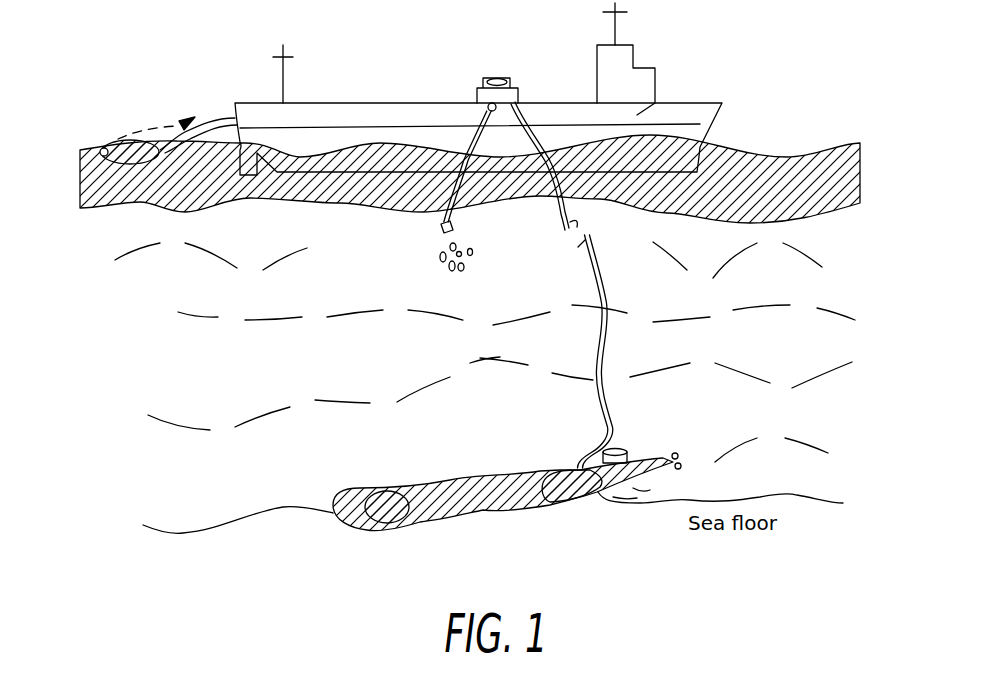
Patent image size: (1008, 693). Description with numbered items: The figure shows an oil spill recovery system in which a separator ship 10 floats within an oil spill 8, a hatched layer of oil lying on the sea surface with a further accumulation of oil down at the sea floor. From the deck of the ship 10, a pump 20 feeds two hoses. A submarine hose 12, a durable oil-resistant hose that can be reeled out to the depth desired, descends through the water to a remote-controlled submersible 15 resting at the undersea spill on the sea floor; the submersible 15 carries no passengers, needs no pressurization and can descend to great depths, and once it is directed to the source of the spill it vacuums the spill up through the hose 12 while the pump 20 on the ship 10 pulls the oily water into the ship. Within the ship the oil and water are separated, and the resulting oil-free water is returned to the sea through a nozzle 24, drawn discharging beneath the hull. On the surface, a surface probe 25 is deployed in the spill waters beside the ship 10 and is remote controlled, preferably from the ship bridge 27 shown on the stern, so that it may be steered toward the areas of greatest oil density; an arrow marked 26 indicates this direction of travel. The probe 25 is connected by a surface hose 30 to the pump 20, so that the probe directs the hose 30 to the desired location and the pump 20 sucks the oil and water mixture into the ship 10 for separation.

The oil spill 8 is at (762, 170).
The separator ship 10 is at (390, 124).
The submarine hose 12 is at (607, 298).
The remote-controlled submersible 15 is at (652, 457).
The pump 20 is at (496, 79).
The nozzle 24 is at (440, 223).
The surface probe 25 is at (123, 140).
The flow direction 26 is at (176, 125).
The ship bridge 27 is at (622, 78).
The surface hose 30 is at (207, 127).